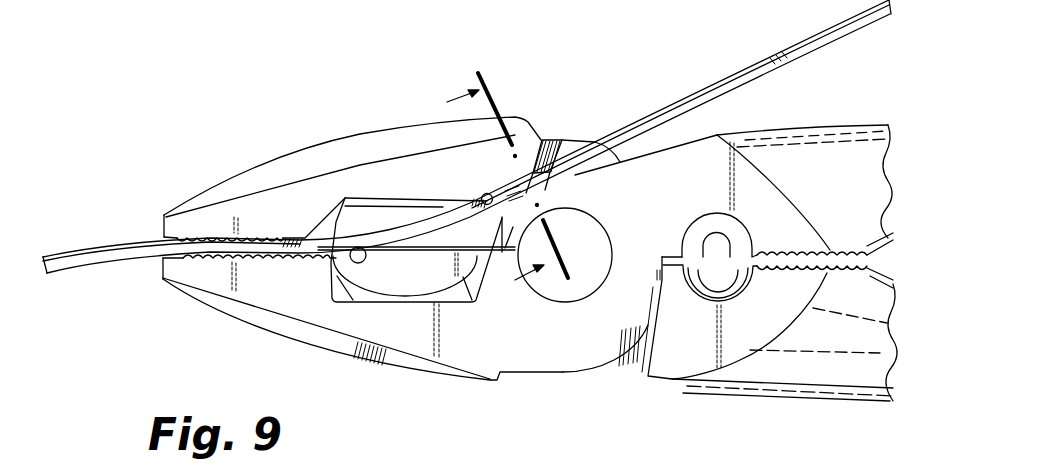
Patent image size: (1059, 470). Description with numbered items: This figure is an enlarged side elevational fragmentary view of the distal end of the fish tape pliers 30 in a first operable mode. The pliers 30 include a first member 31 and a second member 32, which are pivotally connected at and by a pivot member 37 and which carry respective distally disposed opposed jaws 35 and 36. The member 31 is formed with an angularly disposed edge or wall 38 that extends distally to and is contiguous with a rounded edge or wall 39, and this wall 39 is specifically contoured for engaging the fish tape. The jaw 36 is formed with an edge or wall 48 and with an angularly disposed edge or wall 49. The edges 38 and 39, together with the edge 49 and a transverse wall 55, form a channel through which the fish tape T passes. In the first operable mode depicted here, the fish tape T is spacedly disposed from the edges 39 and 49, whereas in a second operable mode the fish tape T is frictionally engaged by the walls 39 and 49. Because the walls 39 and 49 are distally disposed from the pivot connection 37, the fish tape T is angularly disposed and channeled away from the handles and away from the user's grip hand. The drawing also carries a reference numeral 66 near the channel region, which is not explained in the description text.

The fish tape pliers 30 is at (285, 78).
The member 31 is at (819, 134).
The member 32 is at (823, 383).
The jaw 35 is at (246, 324).
The jaw 36 is at (231, 176).
The pivot member 37 is at (603, 256).
The angularly disposed edge or wall 38 is at (627, 153).
The rounded edge or wall 39 is at (513, 235).
The edge or wall 48 is at (550, 137).
The angularly disposed edge or wall 49 is at (481, 212).
The transverse wall 55 is at (587, 141).
The stop 66 is at (563, 137).
The fish tape T is at (117, 248).